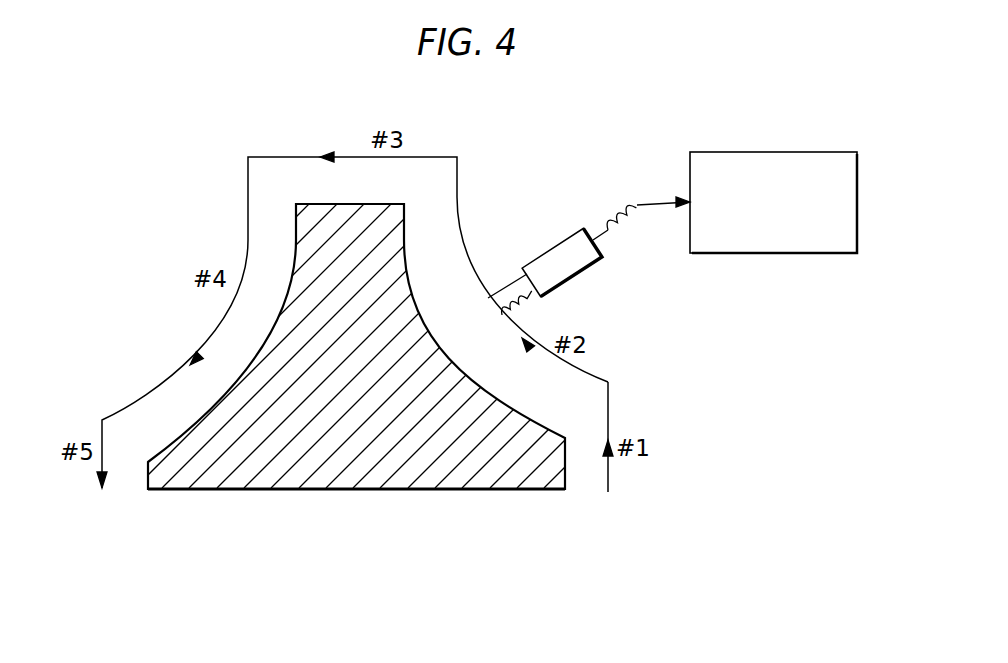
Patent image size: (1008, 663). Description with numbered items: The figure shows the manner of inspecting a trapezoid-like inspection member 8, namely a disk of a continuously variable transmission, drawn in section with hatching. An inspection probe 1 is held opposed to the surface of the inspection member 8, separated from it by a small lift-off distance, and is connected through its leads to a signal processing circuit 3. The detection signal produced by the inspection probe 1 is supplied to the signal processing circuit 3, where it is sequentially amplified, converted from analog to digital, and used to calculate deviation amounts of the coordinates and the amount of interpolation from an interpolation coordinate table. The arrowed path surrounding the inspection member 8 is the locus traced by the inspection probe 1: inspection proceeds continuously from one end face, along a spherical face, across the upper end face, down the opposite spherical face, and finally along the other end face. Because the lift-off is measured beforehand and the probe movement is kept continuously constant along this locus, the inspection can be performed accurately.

The inspection probe 1 is at (553, 246).
The signal processing circuit 3 is at (773, 152).
The trapezoid-like inspection member (disk of a continuously variable transmission) 8 is at (372, 482).